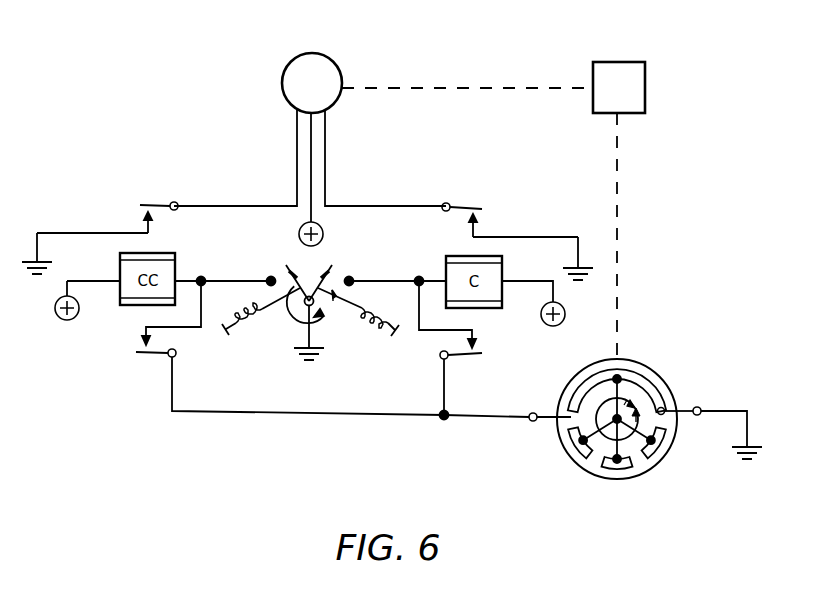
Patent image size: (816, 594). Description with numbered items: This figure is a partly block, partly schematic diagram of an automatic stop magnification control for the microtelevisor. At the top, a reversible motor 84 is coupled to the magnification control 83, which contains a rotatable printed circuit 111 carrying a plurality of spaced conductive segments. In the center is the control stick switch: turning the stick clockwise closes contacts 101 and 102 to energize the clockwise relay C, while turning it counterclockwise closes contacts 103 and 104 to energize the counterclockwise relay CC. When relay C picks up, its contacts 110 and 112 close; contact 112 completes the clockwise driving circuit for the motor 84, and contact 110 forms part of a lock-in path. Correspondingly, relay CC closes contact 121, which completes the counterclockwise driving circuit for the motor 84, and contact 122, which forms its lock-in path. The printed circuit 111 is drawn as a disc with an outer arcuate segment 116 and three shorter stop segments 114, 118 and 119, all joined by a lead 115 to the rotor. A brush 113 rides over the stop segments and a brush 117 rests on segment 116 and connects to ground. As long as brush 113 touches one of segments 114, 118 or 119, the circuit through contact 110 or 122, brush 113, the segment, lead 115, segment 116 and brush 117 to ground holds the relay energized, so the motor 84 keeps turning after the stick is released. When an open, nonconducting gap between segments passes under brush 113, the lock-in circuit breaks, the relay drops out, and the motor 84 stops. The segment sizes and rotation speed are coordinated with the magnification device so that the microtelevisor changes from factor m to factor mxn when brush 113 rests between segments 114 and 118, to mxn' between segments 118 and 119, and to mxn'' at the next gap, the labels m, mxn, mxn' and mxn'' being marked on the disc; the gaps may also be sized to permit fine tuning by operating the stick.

The reversible motor 84 is at (312, 53).
The magnification control 83 is at (619, 87).
The contact 121 is at (138, 207).
The contact 112 is at (486, 211).
The contact 104 is at (293, 271).
The contact 102 is at (326, 271).
The contact 103 is at (268, 277).
The contact 101 is at (355, 277).
The contact 122 is at (134, 352).
The contact 110 is at (484, 353).
The printed circuit 111 is at (595, 362).
The segment 116 is at (645, 366).
The lead 115 is at (620, 393).
The brush 117 is at (684, 405).
The brush 113 is at (553, 423).
The segment 114 is at (565, 447).
The segment 118 is at (613, 468).
The segment 119 is at (663, 459).
The magnification factor m is at (555, 405).
The magnification factor mxn is at (565, 486).
The magnification factor mxn' is at (661, 493).
The magnification factor mxn'' is at (695, 441).